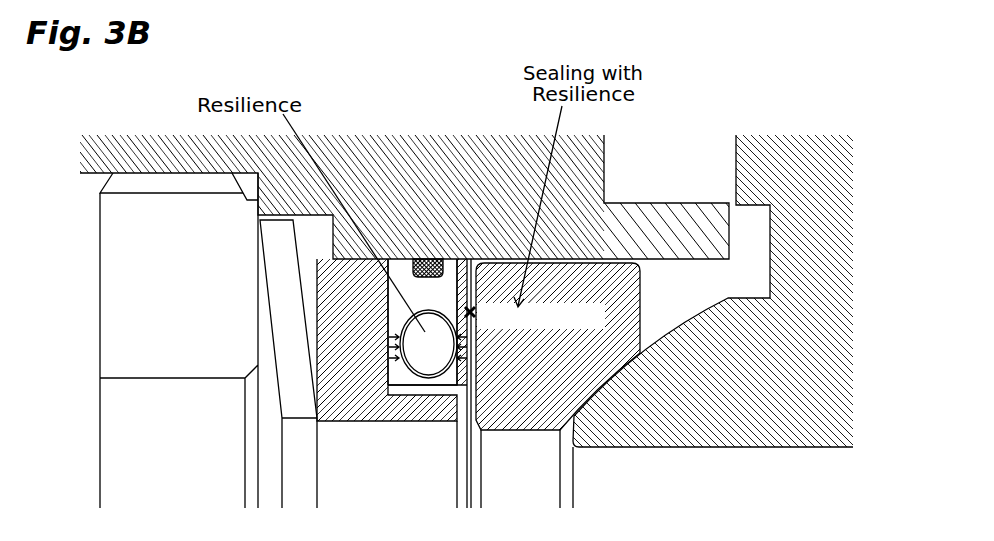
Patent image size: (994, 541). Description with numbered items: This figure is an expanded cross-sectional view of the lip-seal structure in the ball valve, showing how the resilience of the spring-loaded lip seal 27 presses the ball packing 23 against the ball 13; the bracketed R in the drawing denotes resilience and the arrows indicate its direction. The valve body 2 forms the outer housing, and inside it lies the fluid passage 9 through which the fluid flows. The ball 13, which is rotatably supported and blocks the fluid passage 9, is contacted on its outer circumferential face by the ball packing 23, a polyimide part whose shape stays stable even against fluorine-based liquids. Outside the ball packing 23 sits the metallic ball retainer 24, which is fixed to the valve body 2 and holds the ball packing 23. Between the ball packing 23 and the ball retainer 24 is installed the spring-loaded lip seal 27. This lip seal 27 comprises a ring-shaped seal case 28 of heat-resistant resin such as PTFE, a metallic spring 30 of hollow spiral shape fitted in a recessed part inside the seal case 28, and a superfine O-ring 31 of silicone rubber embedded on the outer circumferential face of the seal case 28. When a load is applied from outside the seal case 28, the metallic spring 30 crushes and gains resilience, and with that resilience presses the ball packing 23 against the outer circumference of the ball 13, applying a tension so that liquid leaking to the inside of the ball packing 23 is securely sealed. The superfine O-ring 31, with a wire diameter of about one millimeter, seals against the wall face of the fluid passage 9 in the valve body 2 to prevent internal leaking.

The valve body 2 is at (648, 203).
The fluid passage 9 is at (348, 484).
The ball 13 is at (716, 447).
The ball packing 23 is at (512, 432).
The ball retainer 24 is at (410, 423).
The spring-loaded lip seal 27 is at (388, 312).
The seal case 28 is at (382, 310).
The metallic spring 30 is at (430, 386).
The superfine O-ring 31 is at (428, 259).